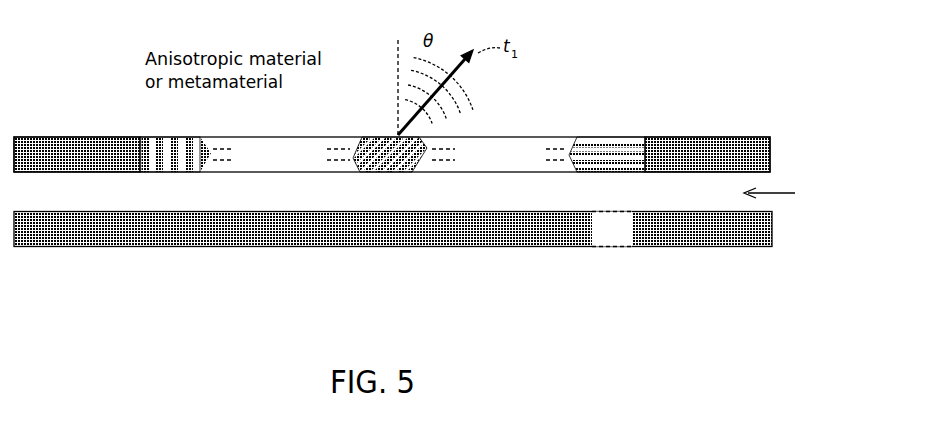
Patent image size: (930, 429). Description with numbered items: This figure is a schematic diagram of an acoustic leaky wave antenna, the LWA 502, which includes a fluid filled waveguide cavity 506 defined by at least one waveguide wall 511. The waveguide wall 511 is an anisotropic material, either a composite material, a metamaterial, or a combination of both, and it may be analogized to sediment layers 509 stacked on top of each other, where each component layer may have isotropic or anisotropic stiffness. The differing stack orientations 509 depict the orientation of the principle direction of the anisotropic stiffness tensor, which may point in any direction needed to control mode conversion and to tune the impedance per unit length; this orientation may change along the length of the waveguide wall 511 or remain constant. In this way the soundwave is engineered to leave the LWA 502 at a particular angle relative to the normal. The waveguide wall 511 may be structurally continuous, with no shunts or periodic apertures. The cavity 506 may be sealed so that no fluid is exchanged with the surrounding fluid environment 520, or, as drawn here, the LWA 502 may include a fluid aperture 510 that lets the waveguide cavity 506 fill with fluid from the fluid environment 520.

The LWA 502 is at (142, 268).
The fluid filled waveguide cavity 506 is at (789, 194).
The sediment layers 509 is at (178, 137).
The fluid aperture 510 is at (608, 235).
The waveguide wall 511 is at (390, 157).
The fluid environment 520 is at (392, 104).